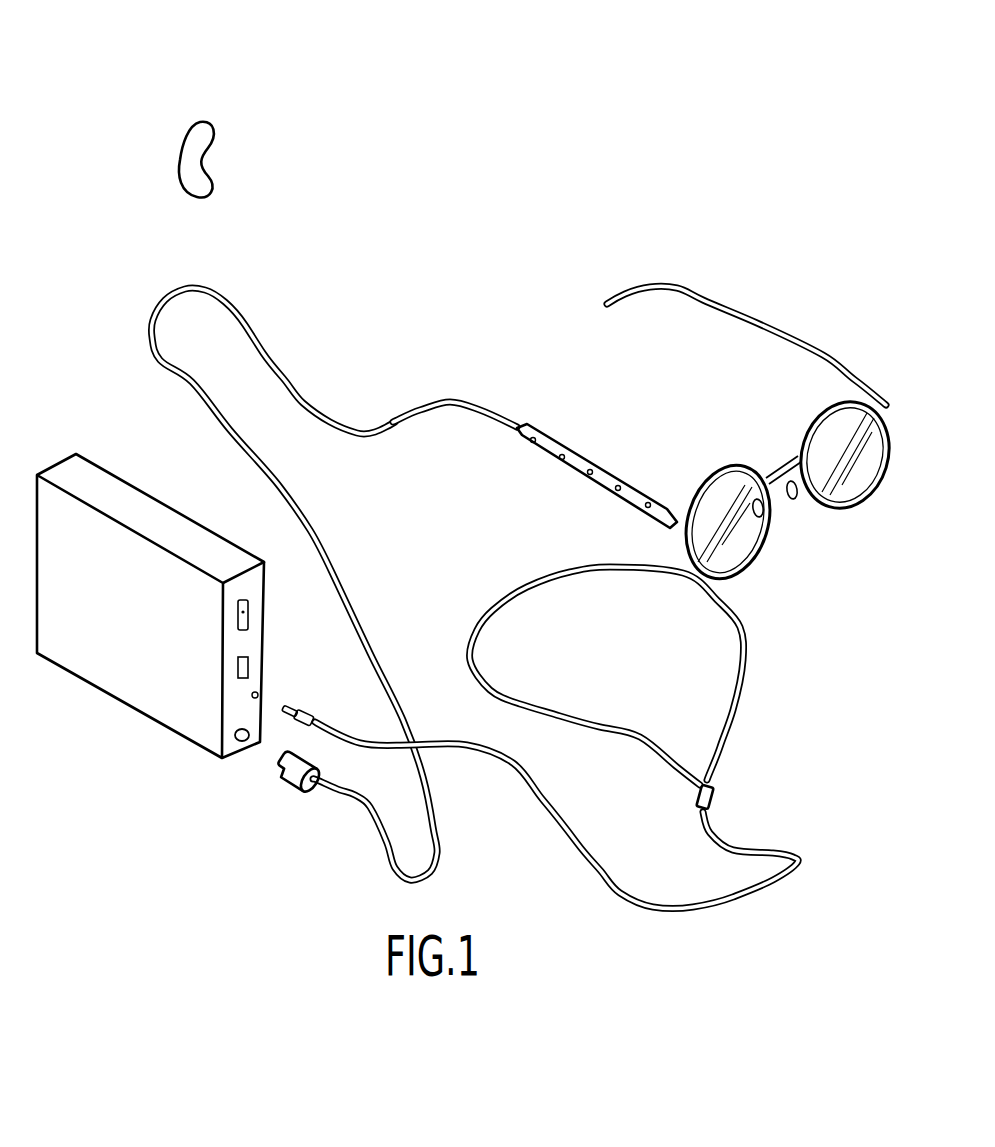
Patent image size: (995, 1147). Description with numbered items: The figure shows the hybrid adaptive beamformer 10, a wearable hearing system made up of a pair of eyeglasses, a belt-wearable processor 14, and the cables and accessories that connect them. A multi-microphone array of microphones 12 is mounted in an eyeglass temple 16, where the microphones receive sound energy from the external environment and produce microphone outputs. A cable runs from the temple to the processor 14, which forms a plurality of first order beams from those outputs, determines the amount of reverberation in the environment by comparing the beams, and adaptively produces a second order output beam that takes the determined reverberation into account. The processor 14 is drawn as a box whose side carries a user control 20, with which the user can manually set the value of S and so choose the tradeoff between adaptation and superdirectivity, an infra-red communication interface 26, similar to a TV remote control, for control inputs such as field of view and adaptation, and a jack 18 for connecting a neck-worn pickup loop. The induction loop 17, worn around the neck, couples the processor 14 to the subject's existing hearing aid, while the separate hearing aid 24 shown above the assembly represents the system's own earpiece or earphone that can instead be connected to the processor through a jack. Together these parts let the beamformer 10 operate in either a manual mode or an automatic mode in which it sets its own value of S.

The hybrid adaptive beamformer 10 is at (334, 213).
The microphones 12 is at (647, 437).
The processor 14 is at (181, 613).
The eyeglass temple 16 is at (590, 462).
The induction loop 17 is at (550, 713).
The jack 18 is at (257, 693).
The user control 20 is at (243, 597).
The hearing aid 24 is at (197, 117).
The infra-red communication interface 26 is at (248, 660).